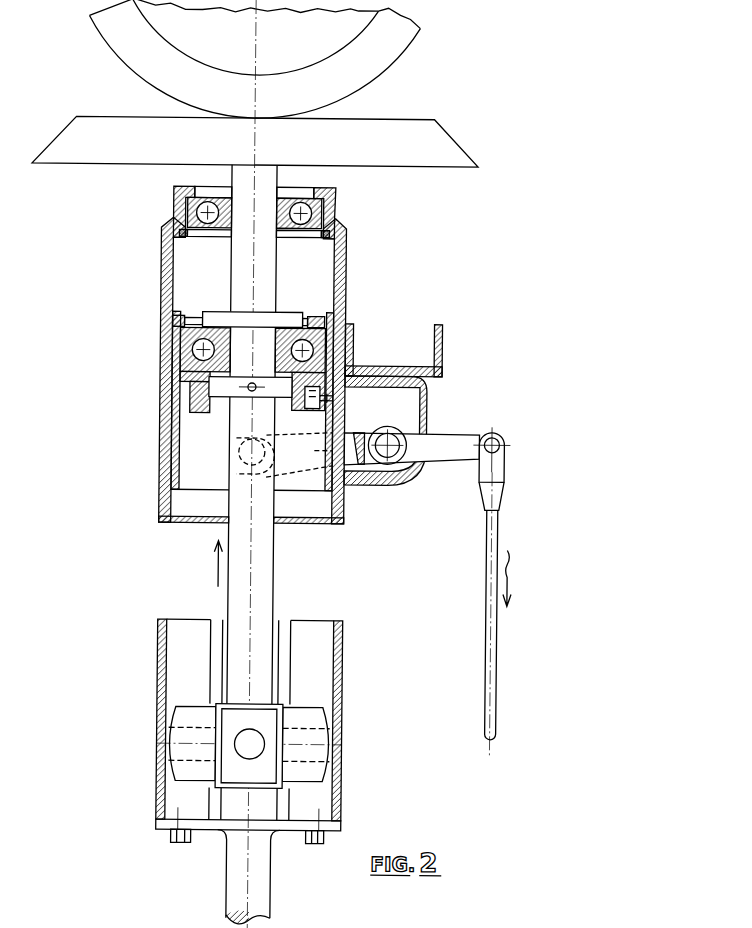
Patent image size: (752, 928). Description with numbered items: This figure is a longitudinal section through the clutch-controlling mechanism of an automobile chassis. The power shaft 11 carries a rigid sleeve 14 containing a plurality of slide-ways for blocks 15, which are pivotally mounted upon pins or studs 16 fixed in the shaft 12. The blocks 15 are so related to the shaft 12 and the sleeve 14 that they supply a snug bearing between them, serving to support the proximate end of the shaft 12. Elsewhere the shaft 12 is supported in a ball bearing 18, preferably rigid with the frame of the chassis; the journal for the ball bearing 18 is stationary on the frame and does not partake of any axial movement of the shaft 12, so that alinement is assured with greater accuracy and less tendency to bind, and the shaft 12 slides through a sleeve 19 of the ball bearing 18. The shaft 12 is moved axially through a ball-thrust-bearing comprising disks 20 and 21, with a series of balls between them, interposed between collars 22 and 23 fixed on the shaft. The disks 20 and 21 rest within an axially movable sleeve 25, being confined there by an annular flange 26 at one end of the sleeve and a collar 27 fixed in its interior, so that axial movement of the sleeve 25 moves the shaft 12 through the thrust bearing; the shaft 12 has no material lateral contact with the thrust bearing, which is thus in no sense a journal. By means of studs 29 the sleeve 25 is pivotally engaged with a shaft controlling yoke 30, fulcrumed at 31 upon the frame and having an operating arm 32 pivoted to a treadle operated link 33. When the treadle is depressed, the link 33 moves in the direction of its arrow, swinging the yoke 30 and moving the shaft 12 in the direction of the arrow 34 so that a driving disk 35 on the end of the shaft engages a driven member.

The power shaft 11 is at (315, 900).
The shaft 12 is at (273, 587).
The sleeve 14 is at (343, 672).
The blocks 15 is at (173, 717).
The pins or studs 16 is at (333, 738).
The ball bearing 18 is at (333, 225).
The sleeve of the ball bearing 19 is at (276, 207).
The disk 20 is at (344, 302).
The disk 21 is at (350, 339).
The collar 22 is at (281, 316).
The collar 23 is at (227, 397).
The axially movable sleeve 25 is at (349, 366).
The annular flange 26 is at (329, 303).
The collar 27 is at (302, 436).
The studs 29 is at (250, 460).
The shaft controlling yoke 30 is at (300, 465).
The fulcrum 31 is at (392, 456).
The operating arm 32 is at (450, 435).
The treadle operated link 33 is at (488, 592).
The arrow 34 is at (220, 585).
The driving disk 35 is at (358, 137).